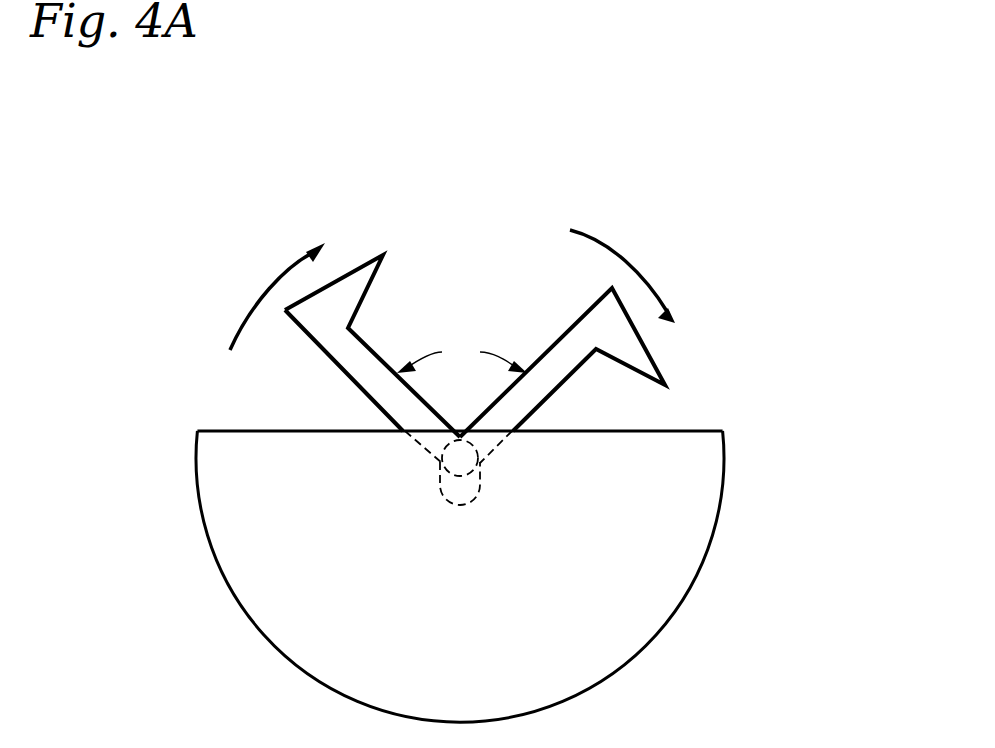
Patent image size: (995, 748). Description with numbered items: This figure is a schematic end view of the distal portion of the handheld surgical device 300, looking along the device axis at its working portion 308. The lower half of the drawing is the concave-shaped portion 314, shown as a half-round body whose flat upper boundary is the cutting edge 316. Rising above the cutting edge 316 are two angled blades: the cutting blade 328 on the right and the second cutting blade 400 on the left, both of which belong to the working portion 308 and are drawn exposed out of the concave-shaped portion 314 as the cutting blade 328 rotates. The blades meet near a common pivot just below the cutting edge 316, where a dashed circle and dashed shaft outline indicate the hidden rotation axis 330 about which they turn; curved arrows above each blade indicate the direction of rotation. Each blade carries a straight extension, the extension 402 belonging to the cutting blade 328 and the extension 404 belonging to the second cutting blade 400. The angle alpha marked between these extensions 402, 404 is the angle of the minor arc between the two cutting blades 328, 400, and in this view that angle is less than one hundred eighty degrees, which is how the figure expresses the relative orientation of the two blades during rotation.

The handheld surgical device 300 is at (236, 172).
The working portion 308 is at (531, 205).
The concave-shaped portion 314 is at (687, 595).
The cutting edge 316 is at (197, 430).
The cutting blade 328 is at (662, 385).
The pivot shaft 330 is at (440, 505).
The second cutting blade 400 is at (383, 255).
The extension 402 is at (587, 310).
The extension 404 is at (353, 380).